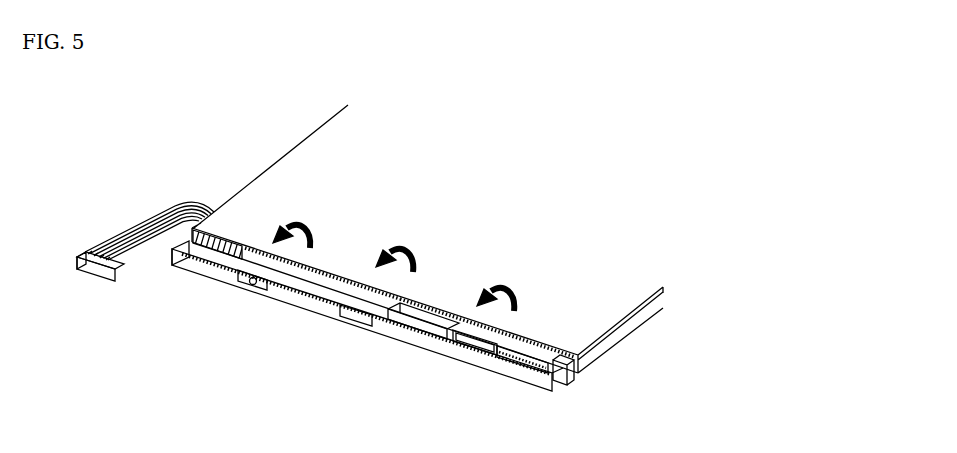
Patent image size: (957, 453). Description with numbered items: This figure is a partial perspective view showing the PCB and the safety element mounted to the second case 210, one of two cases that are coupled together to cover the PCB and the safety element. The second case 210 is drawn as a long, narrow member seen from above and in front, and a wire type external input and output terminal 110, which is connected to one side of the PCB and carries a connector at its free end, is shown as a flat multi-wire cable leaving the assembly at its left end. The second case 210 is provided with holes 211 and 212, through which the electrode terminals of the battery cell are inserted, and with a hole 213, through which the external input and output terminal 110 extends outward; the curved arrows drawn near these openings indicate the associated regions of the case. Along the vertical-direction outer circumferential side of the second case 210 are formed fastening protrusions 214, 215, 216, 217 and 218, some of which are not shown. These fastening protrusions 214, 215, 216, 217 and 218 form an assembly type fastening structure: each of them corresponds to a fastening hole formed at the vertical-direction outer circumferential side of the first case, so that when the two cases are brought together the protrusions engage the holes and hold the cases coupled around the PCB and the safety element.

The wire type external input and output terminal 110 is at (110, 239).
The second case 210 is at (291, 307).
The hole 211 is at (442, 313).
The hole 212 is at (322, 258).
The hole 213 is at (245, 240).
The fastening protrusion 214 is at (251, 288).
The fastening protrusion 215 is at (352, 318).
The fastening protrusion 216 is at (460, 356).
The fastening protrusion 217 is at (566, 376).
The fastening protrusion 218 is at (176, 250).